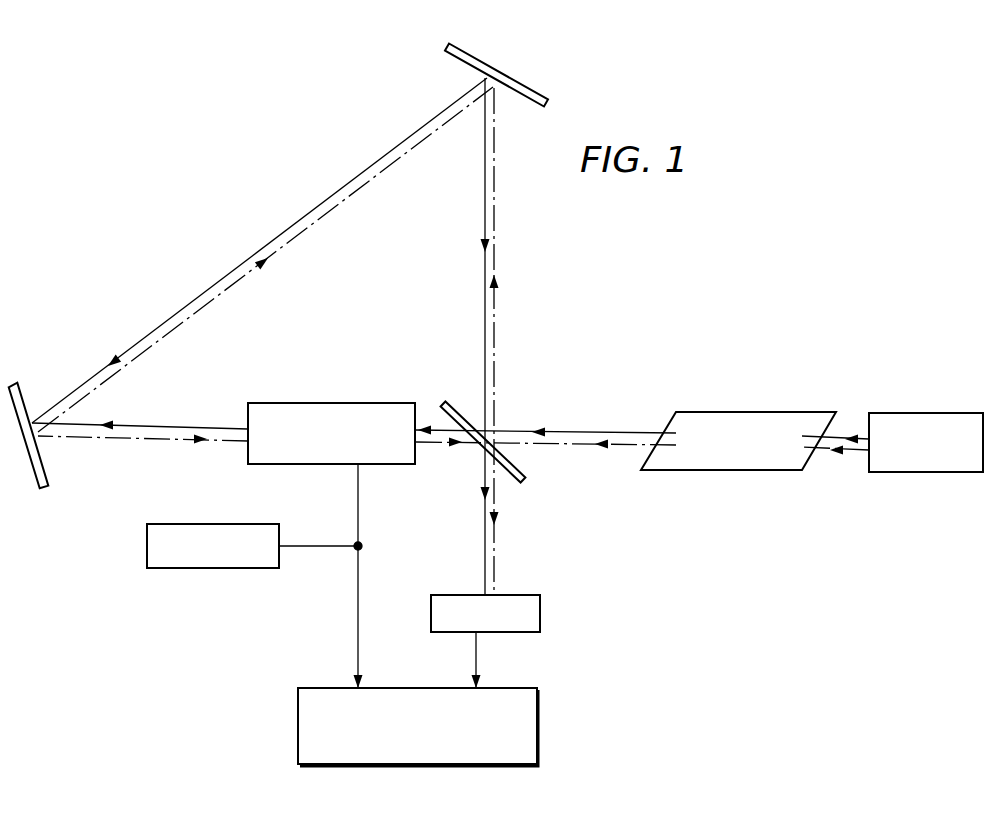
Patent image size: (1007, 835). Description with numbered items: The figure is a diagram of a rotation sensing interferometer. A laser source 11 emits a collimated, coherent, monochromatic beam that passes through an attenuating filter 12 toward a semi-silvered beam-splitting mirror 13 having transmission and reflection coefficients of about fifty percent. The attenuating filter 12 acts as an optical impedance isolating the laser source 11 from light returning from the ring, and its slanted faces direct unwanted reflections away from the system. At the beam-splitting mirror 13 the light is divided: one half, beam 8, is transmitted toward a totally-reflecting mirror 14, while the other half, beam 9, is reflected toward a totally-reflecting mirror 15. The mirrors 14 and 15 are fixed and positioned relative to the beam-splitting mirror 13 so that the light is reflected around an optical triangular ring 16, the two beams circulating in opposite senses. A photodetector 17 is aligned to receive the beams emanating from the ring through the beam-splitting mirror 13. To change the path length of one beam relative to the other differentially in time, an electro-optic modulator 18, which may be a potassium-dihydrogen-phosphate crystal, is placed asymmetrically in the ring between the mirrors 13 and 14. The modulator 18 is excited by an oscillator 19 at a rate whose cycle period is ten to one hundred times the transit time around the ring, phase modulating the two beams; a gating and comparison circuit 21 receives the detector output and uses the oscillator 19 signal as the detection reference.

The beam 8 is at (570, 433).
The beam 9 is at (589, 447).
The laser source 11 is at (900, 413).
The attenuating filter 12 is at (718, 412).
The beam-splitting mirror 13 is at (524, 477).
The totally-reflecting mirror 14 is at (24, 395).
The totally-reflecting mirror 15 is at (465, 63).
The optical triangular ring 16 is at (360, 303).
The photodetector 17 is at (441, 595).
The electro-optic modulator 18 is at (288, 403).
The oscillator 19 is at (176, 524).
The gating and comparison circuit 21 is at (312, 688).